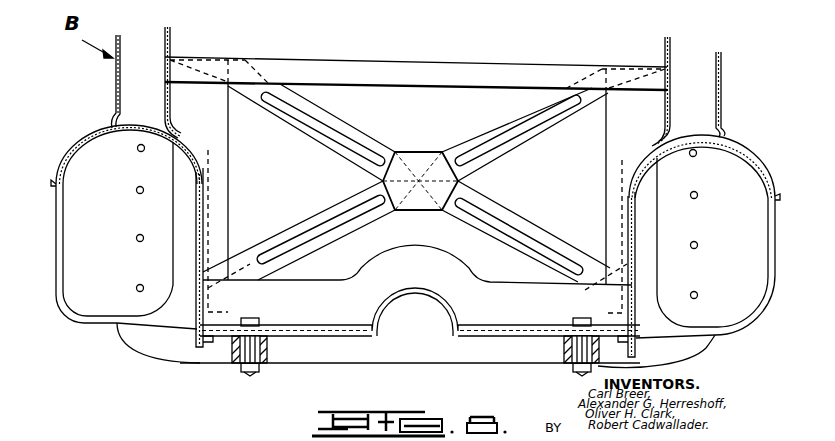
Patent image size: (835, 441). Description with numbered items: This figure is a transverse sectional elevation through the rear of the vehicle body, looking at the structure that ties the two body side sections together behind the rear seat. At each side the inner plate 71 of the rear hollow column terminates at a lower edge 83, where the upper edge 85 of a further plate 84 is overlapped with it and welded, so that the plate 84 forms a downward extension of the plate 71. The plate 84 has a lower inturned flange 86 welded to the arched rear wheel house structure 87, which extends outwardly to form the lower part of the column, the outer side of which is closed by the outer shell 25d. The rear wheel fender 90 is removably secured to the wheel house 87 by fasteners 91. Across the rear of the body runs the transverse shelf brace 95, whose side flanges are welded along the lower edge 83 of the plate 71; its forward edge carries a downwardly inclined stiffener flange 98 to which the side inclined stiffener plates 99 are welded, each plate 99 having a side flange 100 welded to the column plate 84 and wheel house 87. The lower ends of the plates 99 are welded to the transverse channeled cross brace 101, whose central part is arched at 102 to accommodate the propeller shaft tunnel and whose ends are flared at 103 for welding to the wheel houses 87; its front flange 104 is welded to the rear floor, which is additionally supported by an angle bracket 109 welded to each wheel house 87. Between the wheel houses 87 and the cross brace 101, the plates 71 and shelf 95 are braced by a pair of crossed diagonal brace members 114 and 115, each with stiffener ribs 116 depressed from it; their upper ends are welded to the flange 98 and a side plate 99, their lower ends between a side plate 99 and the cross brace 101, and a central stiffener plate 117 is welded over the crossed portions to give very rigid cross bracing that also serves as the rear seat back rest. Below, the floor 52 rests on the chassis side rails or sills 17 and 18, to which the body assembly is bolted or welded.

The main side rail or sill 17 is at (265, 362).
The main side rail or sill 18 is at (565, 360).
The outer shell of column 25d is at (114, 75).
The floor 52 is at (520, 332).
The plate 71 is at (172, 42).
The lower edge of plate 71 83 is at (160, 84).
The plate 84 is at (171, 107).
The upper edge of plate 84 85 is at (163, 55).
The lower inturned flange 86 is at (178, 134).
The rear wheel house structure 87 is at (204, 155).
The rear wheel fender 90 is at (80, 150).
The fasteners 91 is at (136, 238).
The transverse shelf brace 95 is at (462, 63).
The stiffener flange 98 is at (355, 70).
The side inclined stiffener plate 99 is at (229, 196).
The side flange 100 is at (626, 175).
The transverse channeled cross brace 101 is at (500, 300).
The arch 102 is at (443, 298).
The flared ends 103 is at (210, 300).
The front flange 104 is at (346, 325).
The angle bracket 109 is at (190, 360).
The diagonal brace member 114 is at (352, 128).
The diagonal brace member 115 is at (306, 226).
The stiffener ribs 116 is at (505, 215).
The central stiffener plate 117 is at (422, 150).